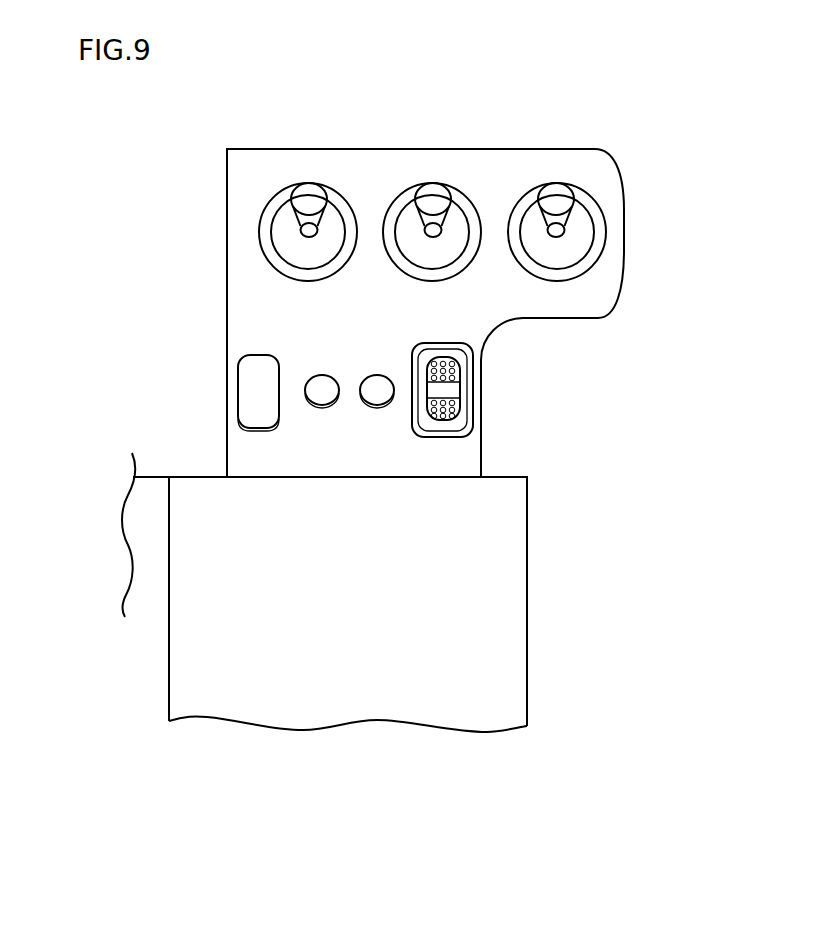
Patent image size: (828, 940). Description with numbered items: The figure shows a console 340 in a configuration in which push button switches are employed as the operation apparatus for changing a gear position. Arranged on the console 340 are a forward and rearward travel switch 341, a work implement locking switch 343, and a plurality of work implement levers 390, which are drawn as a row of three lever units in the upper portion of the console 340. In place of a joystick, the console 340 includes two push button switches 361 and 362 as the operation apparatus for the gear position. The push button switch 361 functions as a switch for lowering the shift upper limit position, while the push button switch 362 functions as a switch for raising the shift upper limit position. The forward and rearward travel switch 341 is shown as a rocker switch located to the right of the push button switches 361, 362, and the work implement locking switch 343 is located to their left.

The console 340 is at (610, 135).
The work implement lever 390 is at (309, 198).
The forward and rearward travel switch 341 is at (452, 390).
The work implement locking switch 343 is at (262, 405).
The push button switch 361 is at (322, 390).
The push button switch 362 is at (377, 390).